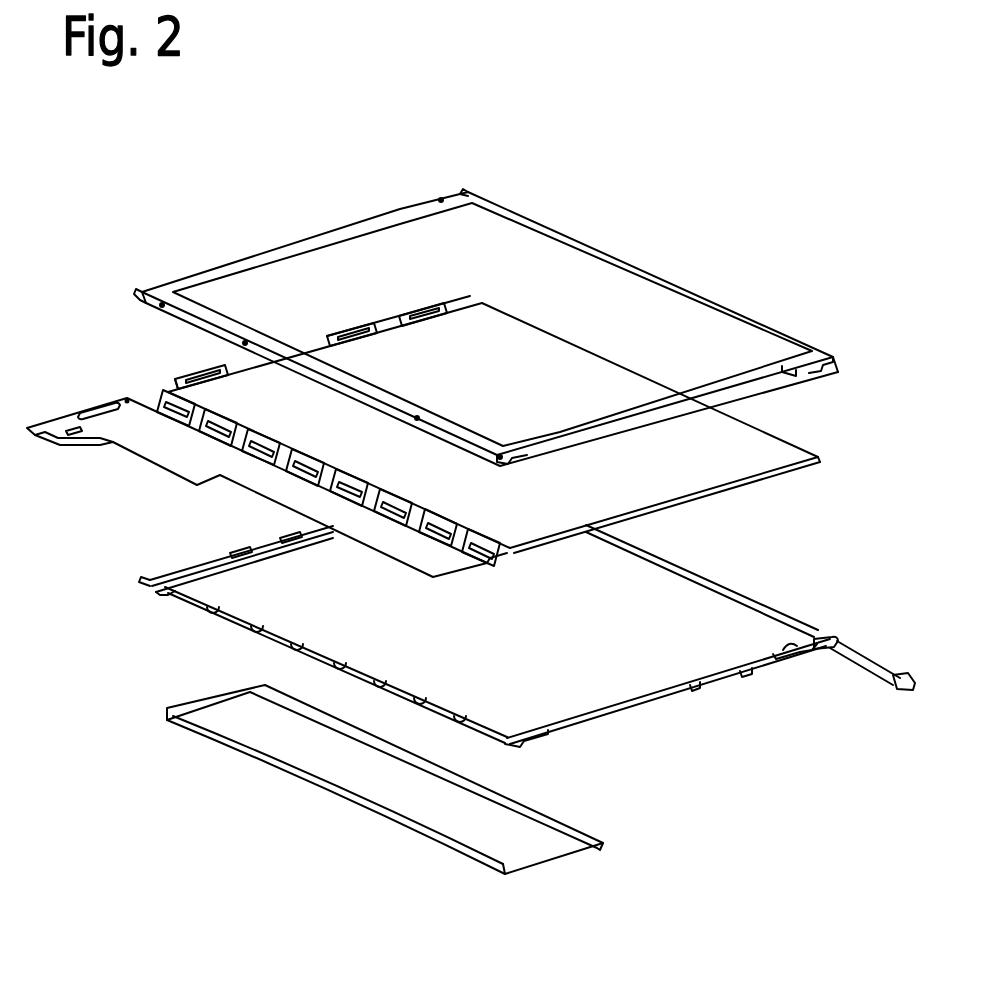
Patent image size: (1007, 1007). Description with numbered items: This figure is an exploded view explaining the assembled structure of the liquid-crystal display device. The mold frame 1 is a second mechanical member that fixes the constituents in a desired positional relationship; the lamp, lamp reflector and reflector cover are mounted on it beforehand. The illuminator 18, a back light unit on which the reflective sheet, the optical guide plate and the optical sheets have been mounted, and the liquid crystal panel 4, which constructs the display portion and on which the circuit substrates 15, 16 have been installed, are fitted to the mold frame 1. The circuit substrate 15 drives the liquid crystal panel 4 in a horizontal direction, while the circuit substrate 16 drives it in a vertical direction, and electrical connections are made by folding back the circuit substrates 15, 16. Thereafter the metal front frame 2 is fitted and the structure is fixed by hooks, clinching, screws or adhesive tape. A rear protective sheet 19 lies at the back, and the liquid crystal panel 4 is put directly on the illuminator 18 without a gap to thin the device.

The mold frame 1 is at (527, 656).
The front frame 2 is at (588, 243).
The liquid crystal panel 4 is at (494, 365).
The circuit substrate 15 is at (330, 338).
The circuit substrate 16 is at (153, 455).
The illuminator 18 is at (662, 658).
The rear protective sheet 19 is at (288, 770).